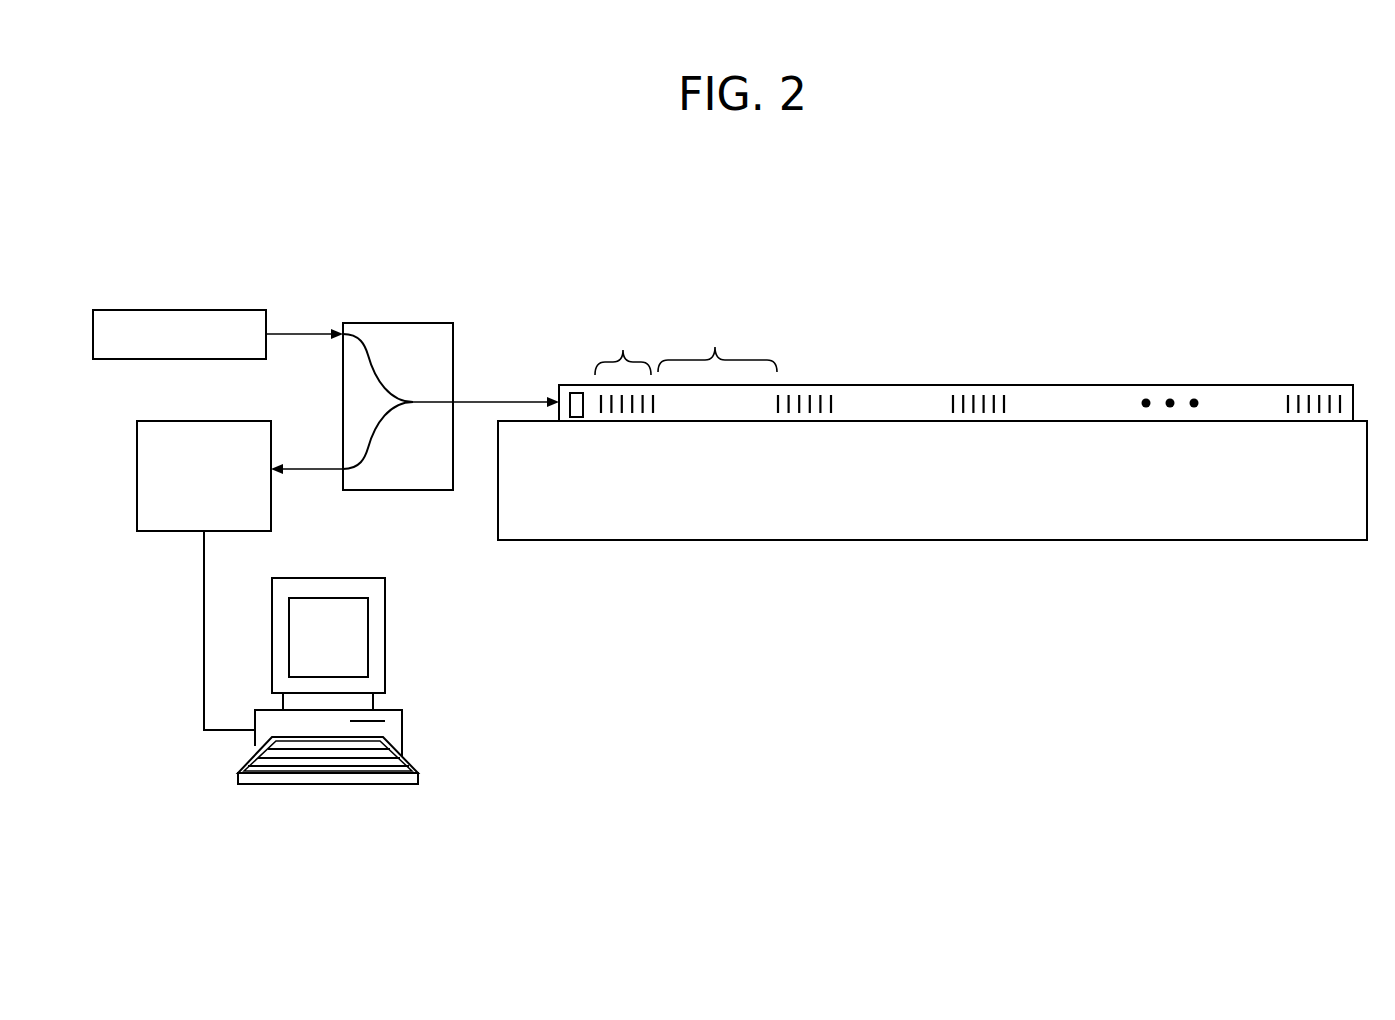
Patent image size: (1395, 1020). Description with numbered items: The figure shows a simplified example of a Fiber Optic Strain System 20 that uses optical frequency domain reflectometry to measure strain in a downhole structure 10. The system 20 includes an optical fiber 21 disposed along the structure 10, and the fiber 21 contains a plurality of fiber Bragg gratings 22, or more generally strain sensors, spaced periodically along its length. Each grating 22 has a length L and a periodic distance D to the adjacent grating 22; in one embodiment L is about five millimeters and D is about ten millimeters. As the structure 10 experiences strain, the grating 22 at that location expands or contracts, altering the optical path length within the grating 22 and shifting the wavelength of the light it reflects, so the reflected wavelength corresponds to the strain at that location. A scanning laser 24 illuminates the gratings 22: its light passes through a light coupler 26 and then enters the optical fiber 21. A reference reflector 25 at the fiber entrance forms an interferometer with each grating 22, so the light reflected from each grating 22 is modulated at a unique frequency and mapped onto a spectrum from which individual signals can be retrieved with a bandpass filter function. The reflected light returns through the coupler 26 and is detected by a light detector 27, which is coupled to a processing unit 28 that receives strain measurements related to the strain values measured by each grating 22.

The structure 10 is at (862, 522).
The fiber optic strain system 20 is at (1242, 235).
The optical fiber 21 is at (878, 400).
The fiber Bragg grating 22 is at (991, 384).
The scanning laser 24 is at (141, 310).
The reference reflector 25 is at (576, 402).
The light coupler 26 is at (449, 320).
The light detector 27 is at (173, 531).
The processing unit 28 is at (403, 730).